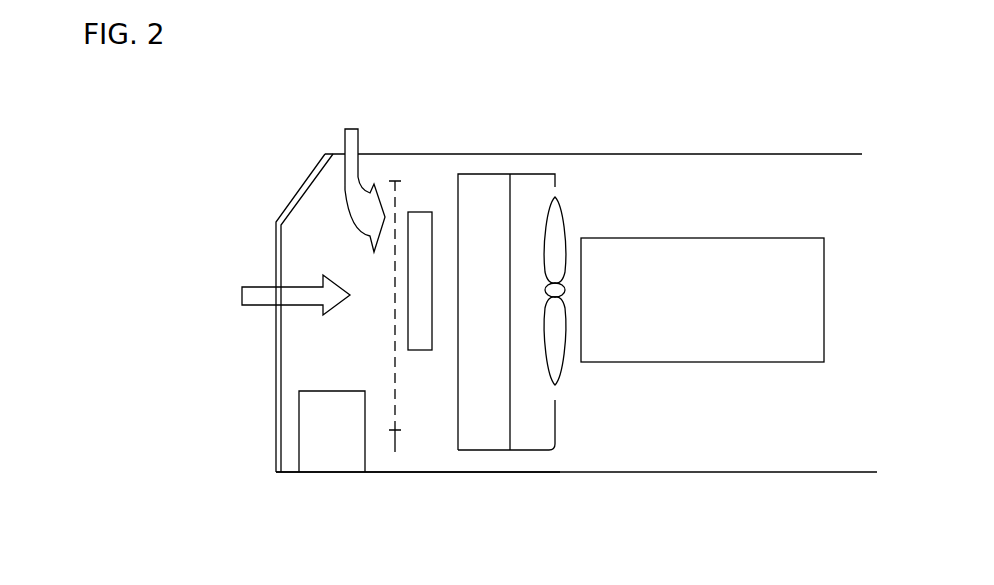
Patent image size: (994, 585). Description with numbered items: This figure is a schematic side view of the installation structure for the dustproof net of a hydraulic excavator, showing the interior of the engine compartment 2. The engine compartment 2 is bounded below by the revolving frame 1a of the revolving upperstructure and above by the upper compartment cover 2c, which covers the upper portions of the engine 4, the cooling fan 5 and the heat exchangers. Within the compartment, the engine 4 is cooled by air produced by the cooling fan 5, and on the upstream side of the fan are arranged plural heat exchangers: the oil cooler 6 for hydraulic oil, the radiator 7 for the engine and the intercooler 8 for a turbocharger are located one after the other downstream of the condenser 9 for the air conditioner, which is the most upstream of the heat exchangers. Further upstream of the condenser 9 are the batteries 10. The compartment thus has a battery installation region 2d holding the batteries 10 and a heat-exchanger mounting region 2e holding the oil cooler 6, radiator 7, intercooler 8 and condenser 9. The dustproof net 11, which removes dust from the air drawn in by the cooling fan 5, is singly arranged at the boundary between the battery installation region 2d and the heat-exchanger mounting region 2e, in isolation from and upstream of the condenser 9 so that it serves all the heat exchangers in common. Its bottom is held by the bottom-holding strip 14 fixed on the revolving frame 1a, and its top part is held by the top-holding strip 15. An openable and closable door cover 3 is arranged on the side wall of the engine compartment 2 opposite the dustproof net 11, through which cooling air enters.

The revolving frame 1a is at (762, 472).
The engine compartment 2 is at (571, 313).
The upper compartment cover 2c is at (597, 154).
The battery installation region 2d is at (325, 448).
The heat-exchanger mounting region 2e is at (448, 447).
The door cover 3 is at (272, 240).
The engine 4 is at (753, 238).
The cooling fan 5 is at (562, 350).
The oil cooler 6 is at (487, 185).
The radiator 7 is at (506, 312).
The intercooler 8 is at (517, 255).
The condenser 9 is at (423, 358).
The batteries 10 is at (312, 415).
The dustproof net 11 is at (398, 217).
The bottom-holding strip 14 is at (395, 452).
The top-holding strip 15 is at (393, 174).